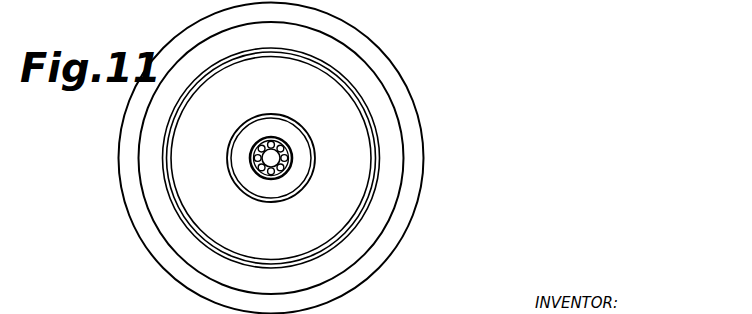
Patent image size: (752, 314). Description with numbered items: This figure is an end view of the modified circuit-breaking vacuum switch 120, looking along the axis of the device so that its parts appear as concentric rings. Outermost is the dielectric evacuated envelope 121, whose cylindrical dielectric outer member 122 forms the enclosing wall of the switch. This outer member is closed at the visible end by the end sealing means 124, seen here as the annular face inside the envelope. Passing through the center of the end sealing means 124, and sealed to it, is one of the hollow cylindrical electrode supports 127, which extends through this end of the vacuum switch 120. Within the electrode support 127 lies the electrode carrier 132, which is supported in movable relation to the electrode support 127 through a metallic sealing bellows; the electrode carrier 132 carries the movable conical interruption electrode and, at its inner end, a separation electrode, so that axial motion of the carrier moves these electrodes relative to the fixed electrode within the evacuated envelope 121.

The vacuum switch 120 is at (483, 77).
The dielectric evacuated envelope 121 is at (433, 146).
The cylindrical dielectric outer member 122 is at (409, 190).
The end sealing means 124 is at (373, 226).
The electrode support 127 is at (310, 136).
The electrode carrier 132 is at (257, 167).